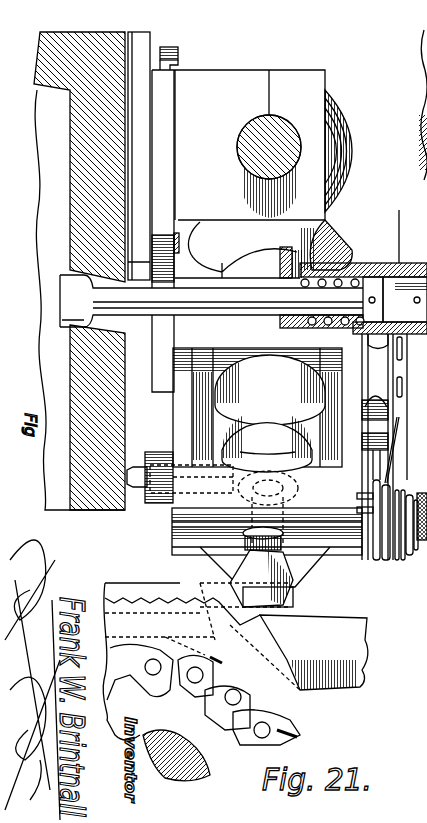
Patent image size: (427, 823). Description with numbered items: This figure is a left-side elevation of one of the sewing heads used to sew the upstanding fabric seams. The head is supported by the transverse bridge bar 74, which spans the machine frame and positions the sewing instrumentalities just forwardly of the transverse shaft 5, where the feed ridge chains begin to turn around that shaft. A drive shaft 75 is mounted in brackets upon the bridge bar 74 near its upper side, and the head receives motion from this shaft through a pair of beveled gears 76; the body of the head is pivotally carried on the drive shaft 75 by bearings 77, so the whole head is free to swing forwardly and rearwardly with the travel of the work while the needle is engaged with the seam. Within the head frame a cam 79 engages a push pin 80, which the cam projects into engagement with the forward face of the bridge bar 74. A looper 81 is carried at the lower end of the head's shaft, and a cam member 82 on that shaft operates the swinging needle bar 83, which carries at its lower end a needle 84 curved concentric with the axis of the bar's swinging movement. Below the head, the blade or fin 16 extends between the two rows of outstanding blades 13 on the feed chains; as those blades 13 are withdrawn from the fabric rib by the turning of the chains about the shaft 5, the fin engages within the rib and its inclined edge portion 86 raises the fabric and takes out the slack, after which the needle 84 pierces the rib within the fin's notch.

The transverse bridge bar 74 is at (85, 222).
The drive shaft 75 is at (250, 158).
The beveled gears 76 is at (345, 150).
The bearings 77 is at (245, 82).
The cam 79 is at (296, 470).
The push pin 80 is at (134, 476).
The looper 81 is at (298, 573).
The cam member 82 is at (267, 444).
The swinging needle bar 83 is at (270, 390).
The needle 84 is at (419, 635).
The inclined edge portion 86 is at (202, 595).
The blade or fin 16 is at (352, 640).
The outstanding blades 13 is at (328, 701).
The transverse shaft 5 is at (180, 765).